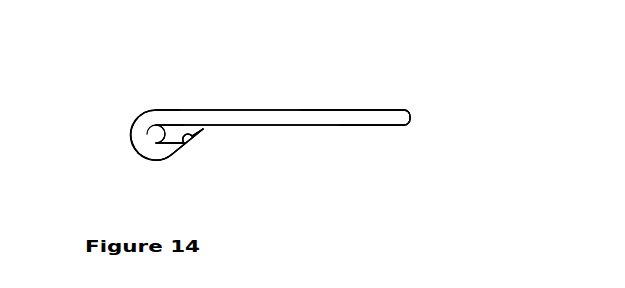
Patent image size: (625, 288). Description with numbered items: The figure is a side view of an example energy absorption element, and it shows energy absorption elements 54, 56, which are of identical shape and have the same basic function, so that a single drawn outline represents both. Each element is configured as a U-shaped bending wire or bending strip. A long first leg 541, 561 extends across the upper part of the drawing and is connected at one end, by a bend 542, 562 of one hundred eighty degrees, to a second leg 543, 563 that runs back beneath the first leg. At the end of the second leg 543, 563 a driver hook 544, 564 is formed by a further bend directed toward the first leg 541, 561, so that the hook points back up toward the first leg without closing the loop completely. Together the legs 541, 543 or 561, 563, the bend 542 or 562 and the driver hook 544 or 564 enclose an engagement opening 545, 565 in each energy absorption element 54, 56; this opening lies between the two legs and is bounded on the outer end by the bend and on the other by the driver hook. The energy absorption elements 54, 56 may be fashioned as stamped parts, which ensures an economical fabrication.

The energy absorption element 54 is at (253, 91).
The energy absorption element 56 is at (283, 91).
The first leg 541 is at (358, 118).
The first leg 561 is at (382, 118).
The bend 542 is at (136, 137).
The bend 562 is at (135, 127).
The second leg 543 is at (154, 160).
The second leg 563 is at (170, 152).
The driver hook 544 is at (190, 140).
The driver hook 564 is at (196, 142).
The engagement opening 545 is at (153, 131).
The engagement opening 565 is at (164, 132).